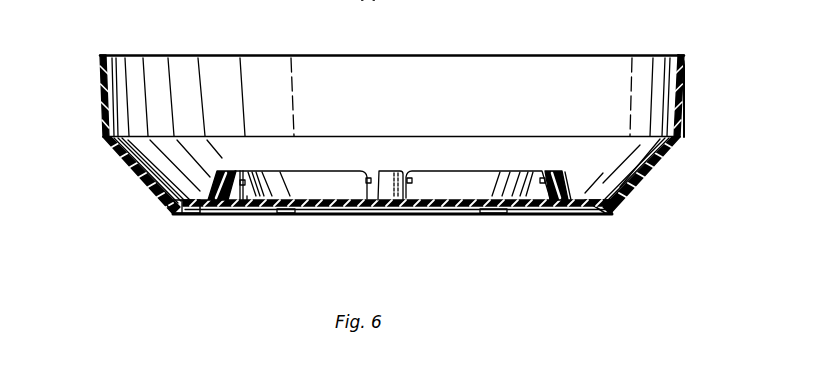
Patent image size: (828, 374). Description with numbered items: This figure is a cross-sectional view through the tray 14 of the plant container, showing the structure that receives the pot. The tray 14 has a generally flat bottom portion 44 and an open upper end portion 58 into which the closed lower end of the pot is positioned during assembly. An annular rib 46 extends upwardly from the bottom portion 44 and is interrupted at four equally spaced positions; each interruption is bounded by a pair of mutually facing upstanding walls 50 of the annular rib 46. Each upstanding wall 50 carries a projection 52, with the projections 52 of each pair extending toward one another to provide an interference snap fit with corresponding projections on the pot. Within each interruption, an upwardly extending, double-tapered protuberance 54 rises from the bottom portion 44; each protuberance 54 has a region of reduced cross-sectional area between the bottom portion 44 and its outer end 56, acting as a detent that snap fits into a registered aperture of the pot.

The tray 14 is at (99, 91).
The bottom portion 44 is at (472, 198).
The annular rib 46 is at (297, 171).
The upstanding walls 50 is at (247, 205).
The projection 52 is at (246, 170).
The protuberance 54 is at (242, 184).
The outer end 56 is at (232, 170).
The open upper end portion 58 is at (684, 55).